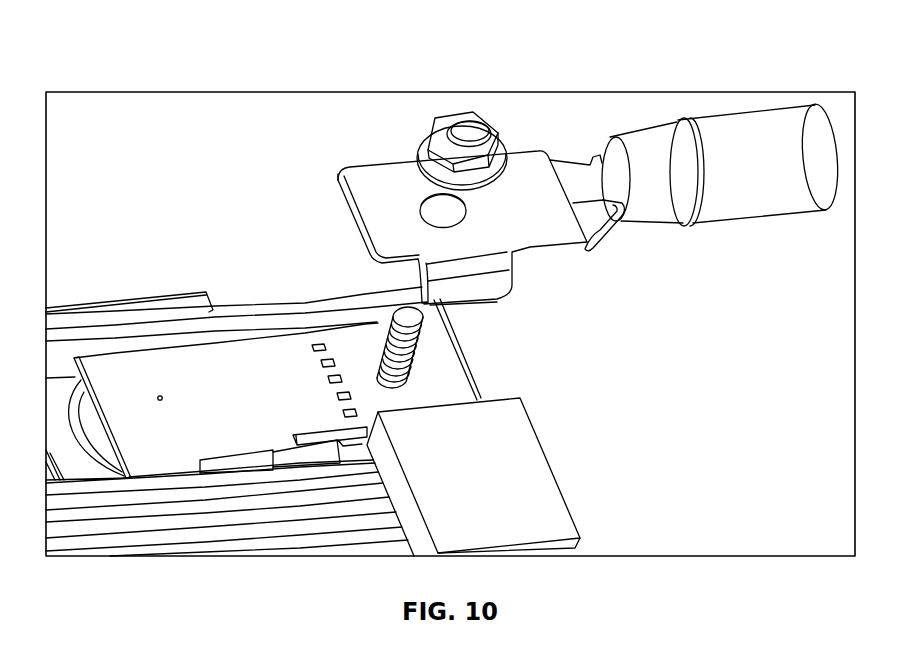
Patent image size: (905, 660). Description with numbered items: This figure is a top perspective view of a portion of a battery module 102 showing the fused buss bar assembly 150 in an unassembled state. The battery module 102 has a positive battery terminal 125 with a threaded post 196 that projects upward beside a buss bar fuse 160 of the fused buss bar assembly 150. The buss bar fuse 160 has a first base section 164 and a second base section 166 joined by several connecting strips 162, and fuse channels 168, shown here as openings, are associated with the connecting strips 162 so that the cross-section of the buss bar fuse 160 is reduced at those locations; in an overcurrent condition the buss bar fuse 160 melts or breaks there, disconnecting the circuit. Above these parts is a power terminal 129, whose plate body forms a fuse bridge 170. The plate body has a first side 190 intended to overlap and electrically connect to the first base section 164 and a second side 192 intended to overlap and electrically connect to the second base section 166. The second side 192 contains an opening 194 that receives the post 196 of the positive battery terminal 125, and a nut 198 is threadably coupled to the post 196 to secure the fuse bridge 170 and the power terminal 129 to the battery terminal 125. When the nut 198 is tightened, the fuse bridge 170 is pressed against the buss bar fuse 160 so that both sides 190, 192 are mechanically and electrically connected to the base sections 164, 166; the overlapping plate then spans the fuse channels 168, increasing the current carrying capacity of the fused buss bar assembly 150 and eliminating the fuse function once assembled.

The battery module 102 is at (652, 365).
The positive battery terminal 125 is at (363, 443).
The power terminal 129 is at (562, 238).
The fused buss bar assembly 150 is at (326, 133).
The buss bar fuse 160 is at (215, 363).
The connecting strips 162 is at (325, 345).
The first base section 164 is at (322, 401).
The second base section 166 is at (338, 363).
The fuse channels 168 is at (305, 348).
The fuse bridge 170 is at (555, 203).
The first side 190 is at (355, 192).
The second side 192 is at (401, 172).
The opening 194 is at (480, 207).
The post 196 is at (398, 378).
The nut 198 is at (453, 117).